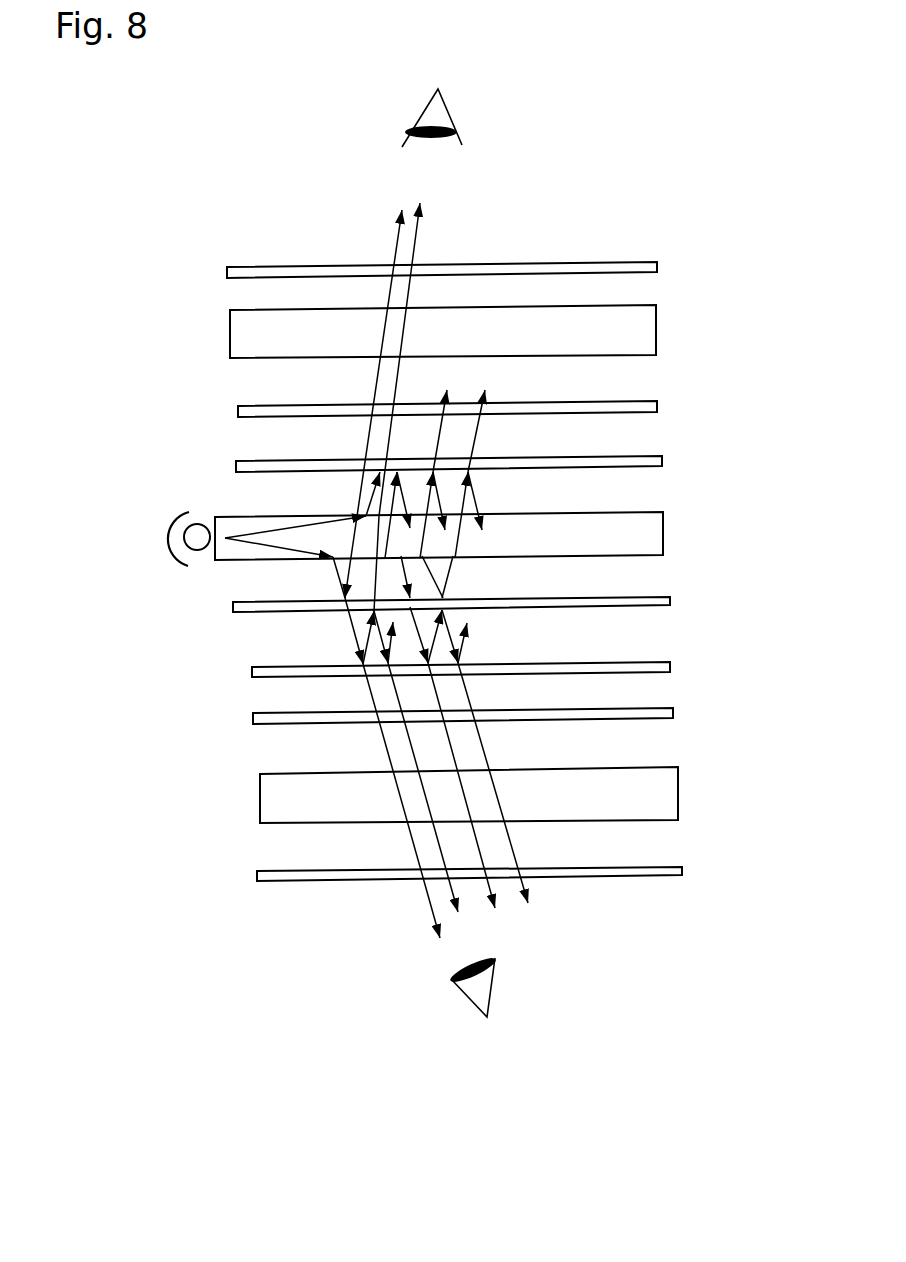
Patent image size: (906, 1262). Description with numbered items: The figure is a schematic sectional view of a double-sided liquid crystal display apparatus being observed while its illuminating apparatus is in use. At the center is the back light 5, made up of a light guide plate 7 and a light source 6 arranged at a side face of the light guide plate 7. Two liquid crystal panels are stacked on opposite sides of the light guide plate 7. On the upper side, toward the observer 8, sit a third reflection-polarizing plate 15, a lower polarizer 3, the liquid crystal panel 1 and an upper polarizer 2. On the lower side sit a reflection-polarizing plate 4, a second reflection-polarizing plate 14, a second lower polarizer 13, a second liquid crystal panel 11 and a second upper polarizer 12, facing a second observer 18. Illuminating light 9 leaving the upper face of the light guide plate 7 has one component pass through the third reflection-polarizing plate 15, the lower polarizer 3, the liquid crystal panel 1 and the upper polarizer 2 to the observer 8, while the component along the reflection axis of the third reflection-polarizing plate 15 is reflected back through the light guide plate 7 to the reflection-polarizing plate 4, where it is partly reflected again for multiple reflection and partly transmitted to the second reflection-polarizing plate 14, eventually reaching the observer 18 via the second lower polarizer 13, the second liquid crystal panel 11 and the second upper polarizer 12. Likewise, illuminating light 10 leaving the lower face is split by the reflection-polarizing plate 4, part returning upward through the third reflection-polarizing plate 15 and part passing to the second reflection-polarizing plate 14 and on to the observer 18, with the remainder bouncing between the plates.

The liquid crystal panel 1 is at (643, 327).
The upper polarizer 2 is at (653, 262).
The lower polarizer 3 is at (615, 405).
The reflection-polarizing plate 4 is at (672, 600).
The back light 5 is at (144, 550).
The light source 6 is at (177, 522).
The light guide plate 7 is at (650, 530).
The observer 8 is at (448, 112).
The illuminating light 9 is at (240, 528).
The illuminating light 10 is at (270, 550).
The second liquid crystal panel 11 is at (668, 792).
The second upper polarizer 12 is at (673, 878).
The second lower polarizer 13 is at (675, 718).
The second reflection-polarizing plate 14 is at (672, 664).
The third reflection-polarizing plate 15 is at (662, 462).
The observer 18 is at (472, 997).